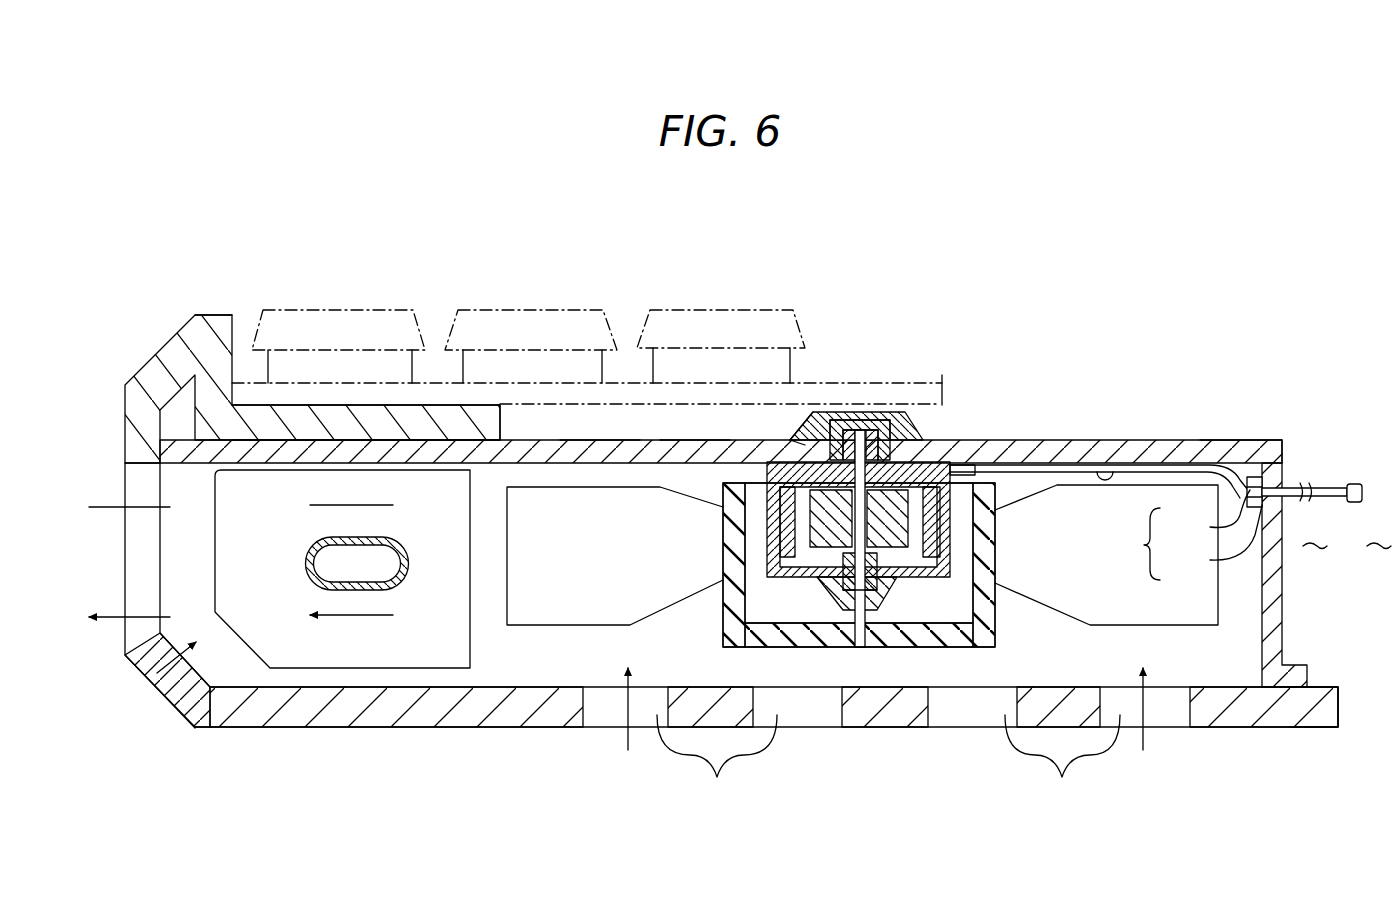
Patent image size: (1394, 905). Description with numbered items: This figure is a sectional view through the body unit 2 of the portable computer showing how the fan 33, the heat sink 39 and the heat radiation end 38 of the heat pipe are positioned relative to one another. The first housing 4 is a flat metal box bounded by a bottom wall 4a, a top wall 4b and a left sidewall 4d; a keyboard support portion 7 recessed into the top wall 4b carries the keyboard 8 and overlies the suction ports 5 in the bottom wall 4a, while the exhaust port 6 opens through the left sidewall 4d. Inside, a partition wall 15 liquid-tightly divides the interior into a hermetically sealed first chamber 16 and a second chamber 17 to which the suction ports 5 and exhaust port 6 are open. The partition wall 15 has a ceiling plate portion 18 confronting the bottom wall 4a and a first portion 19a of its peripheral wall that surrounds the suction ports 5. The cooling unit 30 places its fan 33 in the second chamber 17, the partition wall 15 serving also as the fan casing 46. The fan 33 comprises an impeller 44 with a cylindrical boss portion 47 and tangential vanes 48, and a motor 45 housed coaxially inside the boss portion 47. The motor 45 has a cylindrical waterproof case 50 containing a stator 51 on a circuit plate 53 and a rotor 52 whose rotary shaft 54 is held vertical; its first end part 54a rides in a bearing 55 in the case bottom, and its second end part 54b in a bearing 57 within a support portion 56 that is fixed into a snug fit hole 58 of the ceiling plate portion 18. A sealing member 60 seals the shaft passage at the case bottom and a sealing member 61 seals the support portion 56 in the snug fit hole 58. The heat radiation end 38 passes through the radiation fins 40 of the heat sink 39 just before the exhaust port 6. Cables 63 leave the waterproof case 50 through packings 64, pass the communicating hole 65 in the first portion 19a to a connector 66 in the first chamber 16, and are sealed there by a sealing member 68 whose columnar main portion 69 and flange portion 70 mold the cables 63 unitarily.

The body unit 2 is at (141, 355).
The first housing 4 is at (1292, 727).
The bottom wall 4a is at (428, 715).
The top wall 4b is at (217, 312).
The left sidewall 4d is at (133, 448).
The suction ports 5 is at (888, 762).
The exhaust port 6 is at (145, 575).
The keyboard support portion 7 is at (238, 335).
The keyboard 8 is at (483, 308).
The partition wall 15 is at (1255, 433).
The first chamber 16 is at (1347, 544).
The second chamber 17 is at (557, 662).
The ceiling plate portion 18 is at (596, 440).
The first portion 19a is at (1283, 602).
The cooling unit 30 is at (153, 670).
The fan 33 is at (820, 663).
The heat radiation end 38 is at (310, 565).
The heat sink 39 is at (240, 650).
The radiation fins 40 is at (317, 657).
The impeller 44 is at (947, 650).
The motor 45 is at (748, 523).
The casing 46 is at (693, 440).
The boss portion 47 is at (1000, 625).
The vanes 48 is at (530, 603).
The waterproof case 50 is at (945, 537).
The stator 51 is at (935, 505).
The rotor 52 is at (952, 565).
The circuit plate 53 is at (918, 476).
The rotary shaft 54 is at (858, 527).
The first end part 54a is at (872, 648).
The second end part 54b is at (862, 413).
The bearing 55 is at (838, 590).
The support portion 56 is at (840, 413).
The bearing 57 is at (805, 445).
The snug fit hole 58 is at (905, 417).
The sealing member 60 is at (900, 555).
The sealing member 61 is at (815, 440).
The cables 63 is at (1118, 463).
The packings 64 is at (965, 475).
The communicating hole 65 is at (1262, 478).
The connector 66 is at (1355, 484).
The sealing member 68 is at (1133, 544).
The main portion 69 is at (1210, 560).
The flange portion 70 is at (1210, 527).